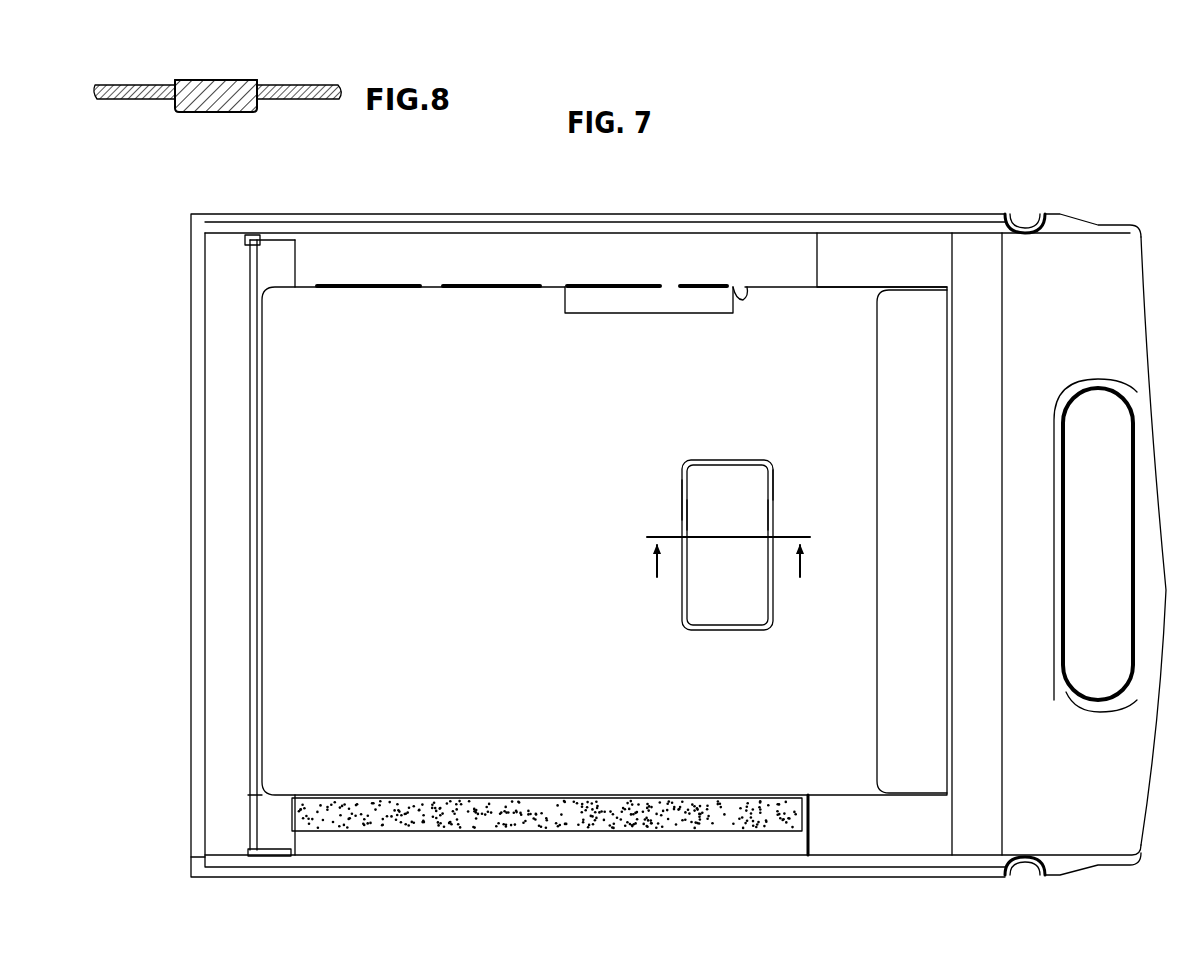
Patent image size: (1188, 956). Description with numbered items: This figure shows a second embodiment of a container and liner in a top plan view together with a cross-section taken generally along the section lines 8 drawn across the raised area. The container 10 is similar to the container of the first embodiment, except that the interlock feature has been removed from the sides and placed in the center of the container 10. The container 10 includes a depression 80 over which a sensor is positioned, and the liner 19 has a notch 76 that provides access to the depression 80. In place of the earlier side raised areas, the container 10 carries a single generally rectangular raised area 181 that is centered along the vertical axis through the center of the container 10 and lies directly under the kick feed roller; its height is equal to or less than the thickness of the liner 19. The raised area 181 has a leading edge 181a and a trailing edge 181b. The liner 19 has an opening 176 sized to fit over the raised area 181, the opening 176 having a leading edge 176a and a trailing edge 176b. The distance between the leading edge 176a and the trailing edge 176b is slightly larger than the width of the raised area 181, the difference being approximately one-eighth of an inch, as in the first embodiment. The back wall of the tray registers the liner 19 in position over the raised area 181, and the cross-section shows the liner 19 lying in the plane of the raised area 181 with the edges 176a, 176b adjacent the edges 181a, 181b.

In FIG. 7, the container 10 is at (1020, 180).
In FIG. 8, the liner 19 is at (338, 88).
In FIG. 7, the liner 19 is at (526, 609).
In FIG. 7, the notch 76 is at (745, 293).
In FIG. 7, the depression 80 is at (650, 292).
In FIG. 7, the opening 176 is at (726, 632).
In FIG. 8, the leading edge 176a is at (180, 106).
In FIG. 7, the leading edge 176a is at (683, 497).
In FIG. 8, the trailing edge 176b is at (248, 112).
In FIG. 7, the trailing edge 176b is at (775, 481).
In FIG. 8, the raised area 181 is at (218, 82).
In FIG. 7, the raised area 181 is at (738, 588).
In FIG. 8, the leading edge 181a is at (175, 86).
In FIG. 7, the leading edge 181a is at (687, 521).
In FIG. 8, the trailing edge 181b is at (258, 86).
In FIG. 7, the trailing edge 181b is at (770, 514).
In FIG. 7, the section lines 8 is at (728, 575).